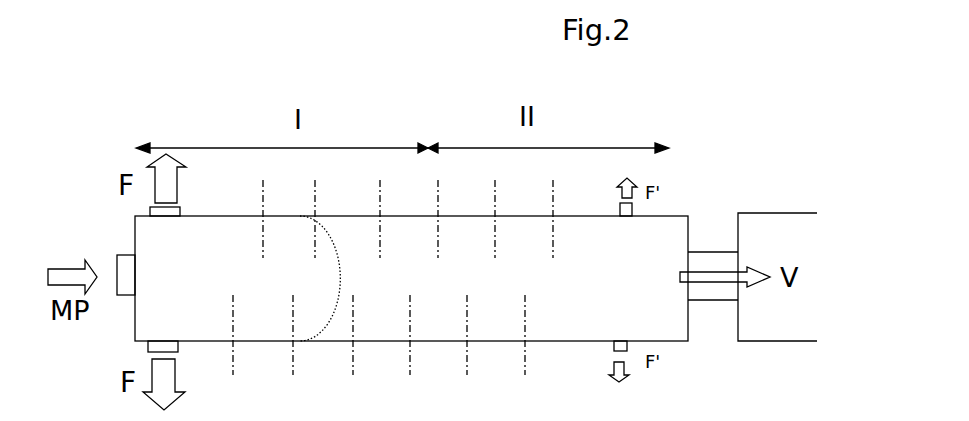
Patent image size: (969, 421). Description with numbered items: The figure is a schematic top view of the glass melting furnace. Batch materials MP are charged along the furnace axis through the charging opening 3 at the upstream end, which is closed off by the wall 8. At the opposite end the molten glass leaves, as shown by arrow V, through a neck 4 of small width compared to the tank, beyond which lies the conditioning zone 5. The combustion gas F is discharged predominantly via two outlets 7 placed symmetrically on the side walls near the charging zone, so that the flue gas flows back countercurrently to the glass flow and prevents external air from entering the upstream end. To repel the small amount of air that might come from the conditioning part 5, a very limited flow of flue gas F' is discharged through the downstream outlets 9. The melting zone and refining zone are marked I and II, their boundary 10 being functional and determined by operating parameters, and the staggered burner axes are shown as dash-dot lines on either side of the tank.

The charging opening 3 is at (117, 296).
The neck 4 is at (693, 252).
The conditioning zone 5 is at (779, 236).
The flue gas outlets 7 is at (180, 215).
The upstream wall 8 is at (135, 233).
The downstream flue gas outlets 9 is at (620, 210).
The boundary between zones 10 is at (335, 313).